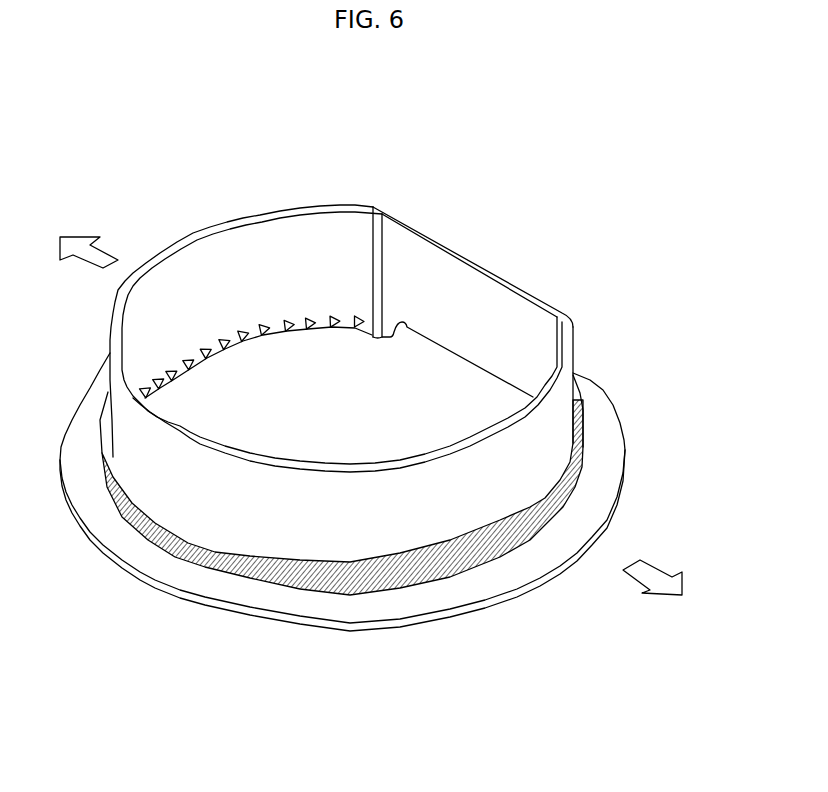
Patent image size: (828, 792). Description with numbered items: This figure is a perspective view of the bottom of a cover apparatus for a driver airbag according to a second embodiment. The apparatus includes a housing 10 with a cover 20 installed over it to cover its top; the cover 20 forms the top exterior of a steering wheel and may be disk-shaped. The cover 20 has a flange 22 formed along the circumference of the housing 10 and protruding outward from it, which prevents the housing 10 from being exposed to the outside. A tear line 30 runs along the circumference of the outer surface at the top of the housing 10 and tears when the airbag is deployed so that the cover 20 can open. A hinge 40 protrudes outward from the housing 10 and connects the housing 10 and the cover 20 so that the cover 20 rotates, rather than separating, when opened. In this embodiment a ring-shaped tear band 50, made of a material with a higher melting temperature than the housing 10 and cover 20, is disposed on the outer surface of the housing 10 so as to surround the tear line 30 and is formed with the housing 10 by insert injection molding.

The housing 10 is at (229, 255).
The cover 20 is at (290, 637).
The flange 22 is at (364, 608).
The tear line 30 is at (272, 333).
The hinge 40 is at (477, 349).
The tear band 50 is at (480, 570).